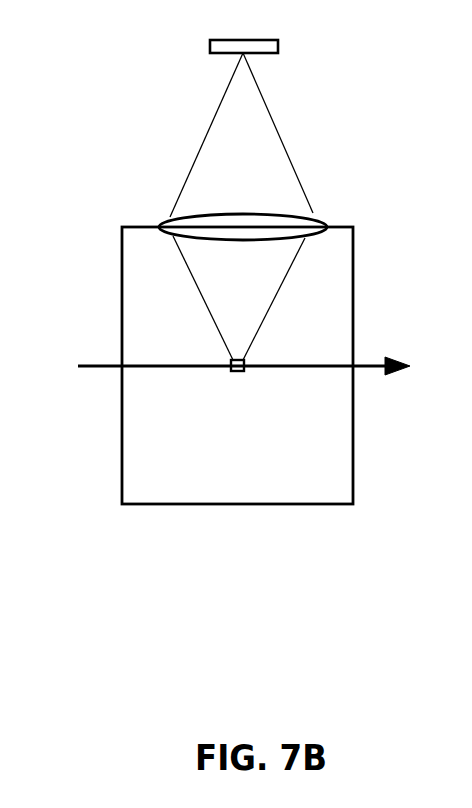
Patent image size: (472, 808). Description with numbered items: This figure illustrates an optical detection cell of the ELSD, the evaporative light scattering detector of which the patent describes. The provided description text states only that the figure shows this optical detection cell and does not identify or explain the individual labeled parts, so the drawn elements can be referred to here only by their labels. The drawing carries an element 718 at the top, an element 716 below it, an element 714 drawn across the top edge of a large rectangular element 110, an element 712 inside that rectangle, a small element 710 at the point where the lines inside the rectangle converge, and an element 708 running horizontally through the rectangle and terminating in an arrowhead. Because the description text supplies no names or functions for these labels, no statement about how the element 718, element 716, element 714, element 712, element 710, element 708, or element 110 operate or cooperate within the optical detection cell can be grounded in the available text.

The substrate / workpiece 110 is at (130, 504).
The scan direction arrow 708 is at (90, 362).
The focal spot 710 is at (245, 371).
The focused beam 712 is at (260, 285).
The lens 714 is at (268, 232).
The diverging beam 716 is at (250, 154).
The light source 718 is at (278, 47).